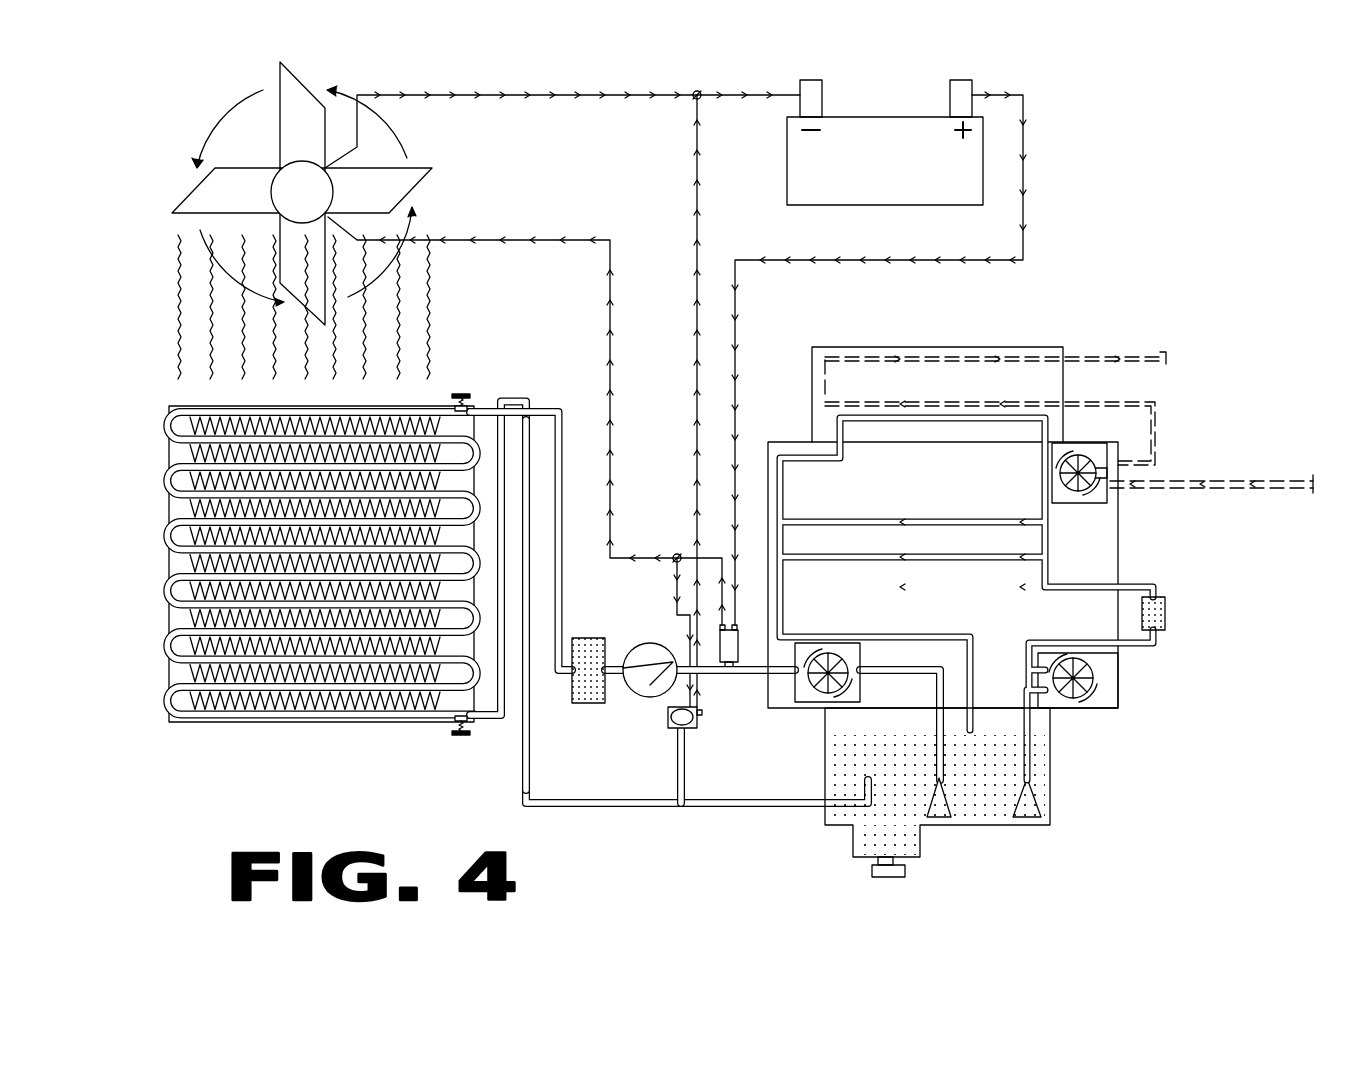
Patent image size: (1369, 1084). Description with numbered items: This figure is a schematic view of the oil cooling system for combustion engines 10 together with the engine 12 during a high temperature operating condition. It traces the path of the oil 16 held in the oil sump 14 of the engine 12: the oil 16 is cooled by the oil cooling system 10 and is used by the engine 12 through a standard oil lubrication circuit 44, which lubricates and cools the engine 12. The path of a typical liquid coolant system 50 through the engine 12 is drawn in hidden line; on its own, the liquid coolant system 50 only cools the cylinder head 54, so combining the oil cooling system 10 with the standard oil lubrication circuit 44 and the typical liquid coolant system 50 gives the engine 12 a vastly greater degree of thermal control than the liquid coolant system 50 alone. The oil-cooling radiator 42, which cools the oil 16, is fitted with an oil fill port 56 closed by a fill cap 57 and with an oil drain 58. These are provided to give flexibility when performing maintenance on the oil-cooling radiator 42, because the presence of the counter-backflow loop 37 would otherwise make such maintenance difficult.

The oil cooling system for combustion engines 10 is at (163, 348).
The engine 12 is at (790, 430).
The oil sump 14 is at (843, 827).
The oil 16 is at (898, 519).
The counter-backflow loop 37 is at (518, 396).
The oil-cooling radiator 42 is at (216, 725).
The oil lubrication circuit 44 is at (1163, 578).
The liquid coolant system 50 is at (1172, 422).
The cylinder head 54 is at (988, 345).
The oil fill port 56 is at (482, 408).
The fill cap 57 is at (465, 392).
The oil drain 58 is at (450, 726).